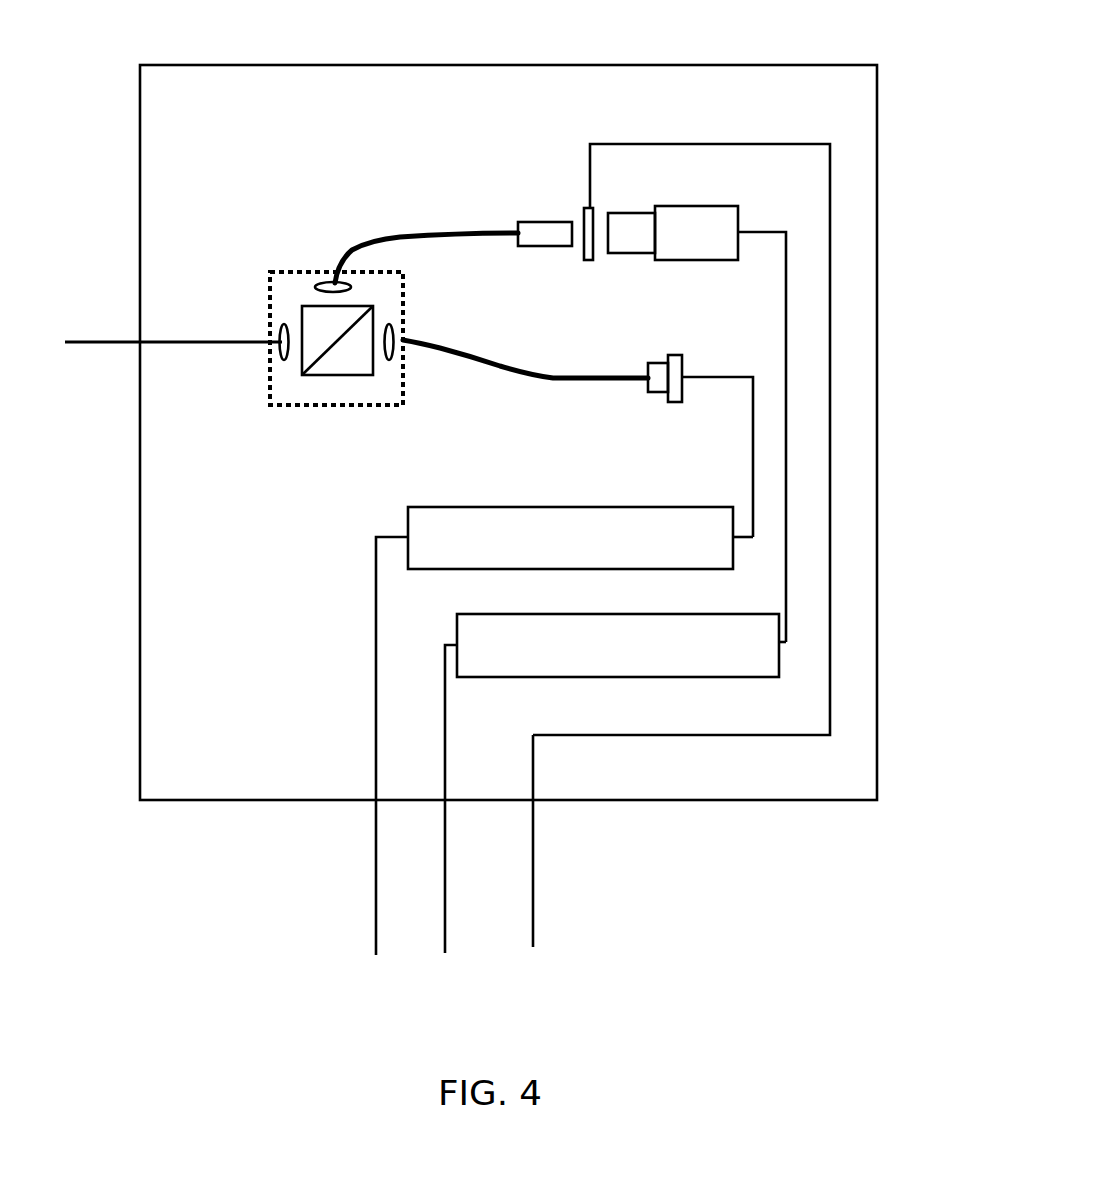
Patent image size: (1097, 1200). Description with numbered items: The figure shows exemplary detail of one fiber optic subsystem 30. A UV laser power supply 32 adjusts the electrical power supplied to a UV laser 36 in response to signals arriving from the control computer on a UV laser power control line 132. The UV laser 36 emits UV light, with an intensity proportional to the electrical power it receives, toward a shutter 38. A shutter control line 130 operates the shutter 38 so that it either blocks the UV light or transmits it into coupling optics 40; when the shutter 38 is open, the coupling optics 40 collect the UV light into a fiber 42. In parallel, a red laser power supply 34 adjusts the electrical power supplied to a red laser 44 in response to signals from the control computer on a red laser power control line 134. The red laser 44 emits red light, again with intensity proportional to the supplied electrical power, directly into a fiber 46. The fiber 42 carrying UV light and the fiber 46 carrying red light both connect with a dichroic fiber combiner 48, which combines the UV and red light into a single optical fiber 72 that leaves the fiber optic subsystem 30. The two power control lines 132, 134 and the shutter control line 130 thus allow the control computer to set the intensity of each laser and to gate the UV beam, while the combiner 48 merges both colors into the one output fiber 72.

The fiber optic subsystem 30 is at (226, 585).
The UV laser power supply 32 is at (766, 655).
The red laser power supply 34 is at (729, 547).
The UV laser 36 is at (705, 228).
The shutter 38 is at (582, 206).
The coupling optics 40 is at (532, 227).
The fiber 42 is at (395, 235).
The red laser 44 is at (663, 368).
The fiber 46 is at (477, 350).
The dichroic fiber combiner 48 is at (323, 320).
The optical fiber 72 is at (110, 338).
The shutter control line 130 is at (533, 920).
The UV laser power control line 132 is at (445, 900).
The red laser power control line 134 is at (376, 900).